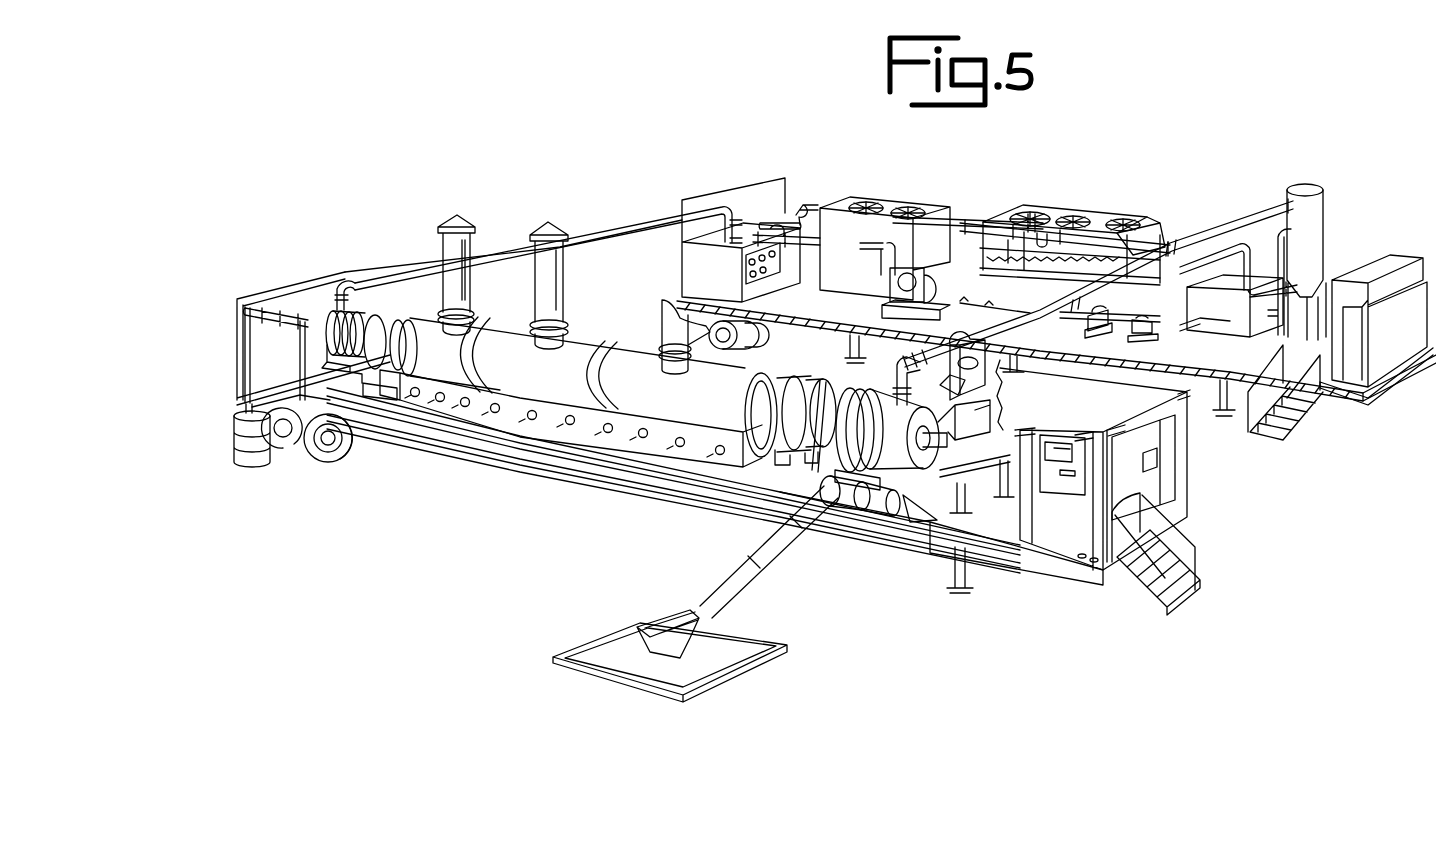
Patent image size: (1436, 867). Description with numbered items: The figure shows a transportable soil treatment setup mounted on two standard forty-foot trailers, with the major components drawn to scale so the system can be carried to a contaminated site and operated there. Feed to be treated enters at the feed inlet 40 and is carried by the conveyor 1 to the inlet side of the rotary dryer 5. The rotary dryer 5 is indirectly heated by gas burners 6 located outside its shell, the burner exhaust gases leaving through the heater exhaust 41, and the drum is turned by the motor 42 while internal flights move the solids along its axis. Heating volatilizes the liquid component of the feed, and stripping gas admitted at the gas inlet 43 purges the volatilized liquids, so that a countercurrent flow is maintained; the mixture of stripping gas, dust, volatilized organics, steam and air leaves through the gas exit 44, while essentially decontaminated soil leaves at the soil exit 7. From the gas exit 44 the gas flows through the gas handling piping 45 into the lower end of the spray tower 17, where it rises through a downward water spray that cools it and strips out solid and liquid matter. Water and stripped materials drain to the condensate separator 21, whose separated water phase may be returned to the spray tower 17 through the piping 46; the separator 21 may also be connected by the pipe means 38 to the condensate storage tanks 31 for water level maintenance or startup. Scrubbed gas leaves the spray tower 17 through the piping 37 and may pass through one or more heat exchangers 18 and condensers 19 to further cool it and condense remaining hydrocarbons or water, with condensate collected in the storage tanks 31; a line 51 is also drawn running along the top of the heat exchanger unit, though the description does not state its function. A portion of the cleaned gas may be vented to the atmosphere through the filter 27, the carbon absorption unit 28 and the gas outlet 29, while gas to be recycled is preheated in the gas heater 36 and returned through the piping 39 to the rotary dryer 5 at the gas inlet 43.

The conveyor 1 is at (772, 557).
The rotary dryer 5 is at (580, 358).
The gas burners 6 is at (612, 438).
The soil exit 7 is at (231, 437).
The spray tower 17 is at (1318, 208).
The heat exchangers 18 is at (1077, 222).
The condensers 19 is at (888, 224).
The condensate separator 21 is at (1217, 297).
The filter 27 is at (848, 198).
The carbon absorption unit 28 is at (770, 230).
The gas outlet 29 is at (804, 210).
The condensate storage tanks 31 is at (1132, 318).
The gas heater 36 is at (690, 258).
The piping 37 is at (1143, 240).
The pipe means 38 is at (1150, 323).
The piping 39 is at (596, 236).
The feed inlet 40 is at (652, 618).
The heater exhaust 41 is at (463, 226).
The motor 42 is at (845, 495).
The gas inlet 43 is at (318, 316).
The gas exit 44 is at (893, 401).
The gas handling piping 45 is at (1262, 250).
The piping 46 is at (1283, 245).
The coolant line 51 is at (1003, 224).